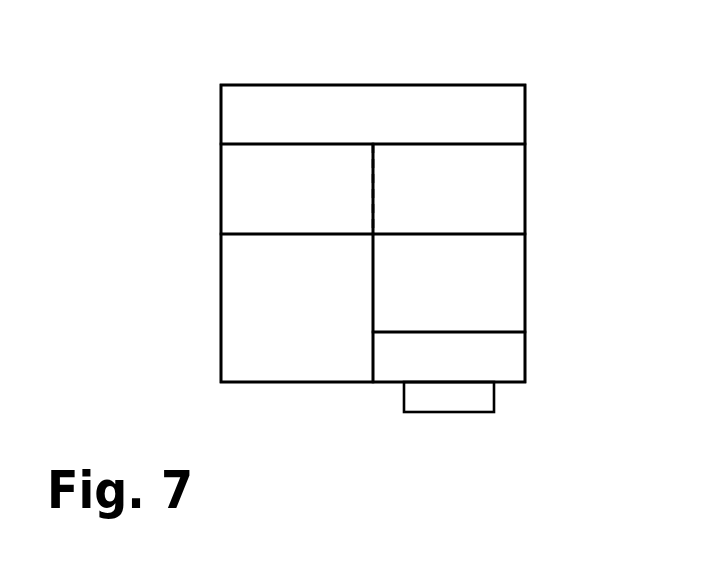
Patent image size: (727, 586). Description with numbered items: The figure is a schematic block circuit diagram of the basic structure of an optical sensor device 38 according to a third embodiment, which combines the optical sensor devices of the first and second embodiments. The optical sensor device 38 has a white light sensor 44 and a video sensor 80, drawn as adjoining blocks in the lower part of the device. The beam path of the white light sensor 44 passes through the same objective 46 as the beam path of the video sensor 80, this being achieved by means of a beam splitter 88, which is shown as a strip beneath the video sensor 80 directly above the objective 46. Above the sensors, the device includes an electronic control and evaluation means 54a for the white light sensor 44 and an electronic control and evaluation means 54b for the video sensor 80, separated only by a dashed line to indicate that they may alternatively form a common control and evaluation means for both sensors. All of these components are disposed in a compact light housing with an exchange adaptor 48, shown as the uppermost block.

The optical sensor device 38 is at (173, 90).
The exchange adaptor 48 is at (482, 100).
The electronic control and evaluation means 54a is at (250, 200).
The electronic control and evaluation means 54b is at (508, 192).
The white light sensor 44 is at (255, 335).
The video sensor 80 is at (503, 320).
The beam splitter 88 is at (515, 365).
The objective 46 is at (458, 402).